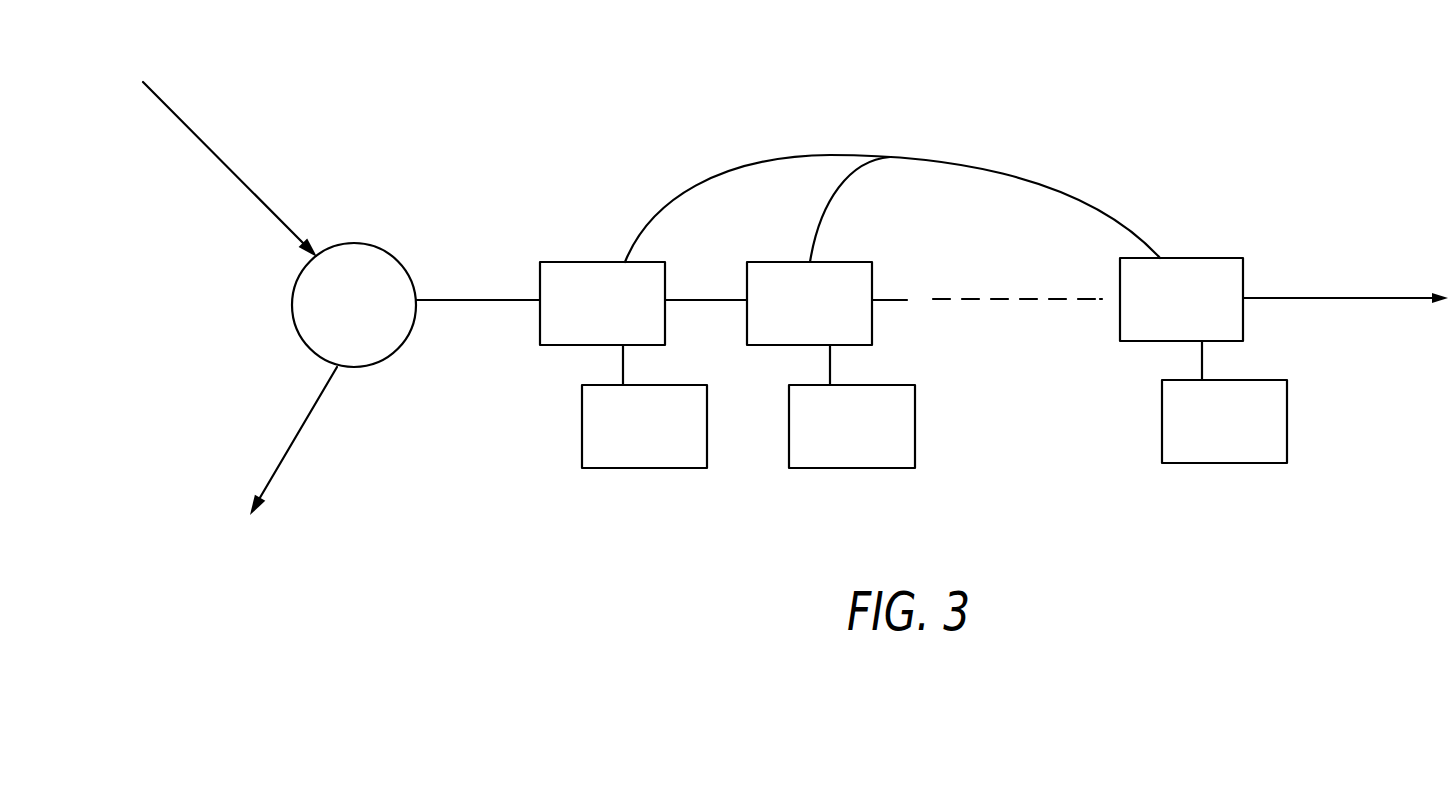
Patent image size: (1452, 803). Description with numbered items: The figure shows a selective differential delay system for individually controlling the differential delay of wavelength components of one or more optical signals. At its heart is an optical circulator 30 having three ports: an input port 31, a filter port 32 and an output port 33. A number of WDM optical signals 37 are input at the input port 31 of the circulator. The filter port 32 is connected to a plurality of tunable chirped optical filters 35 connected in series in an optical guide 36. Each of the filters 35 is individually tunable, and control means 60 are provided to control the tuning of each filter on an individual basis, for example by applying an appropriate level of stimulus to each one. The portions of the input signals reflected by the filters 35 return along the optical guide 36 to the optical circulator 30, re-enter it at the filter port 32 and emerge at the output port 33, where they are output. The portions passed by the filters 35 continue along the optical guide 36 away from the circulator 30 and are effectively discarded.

The optical circulator 30 is at (353, 228).
The input port 31 is at (315, 258).
The filter port 32 is at (417, 297).
The output port 33 is at (340, 368).
The tunable chirped optical filters 35 is at (913, 156).
The optical guide 36 is at (1278, 293).
The WDM optical signals 37 is at (211, 153).
The control means 60 is at (659, 439).